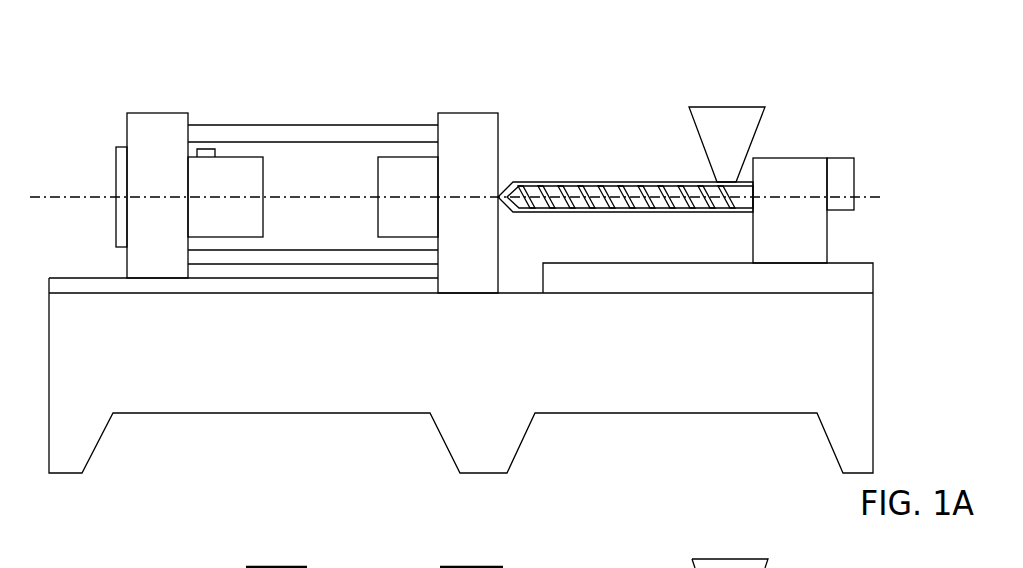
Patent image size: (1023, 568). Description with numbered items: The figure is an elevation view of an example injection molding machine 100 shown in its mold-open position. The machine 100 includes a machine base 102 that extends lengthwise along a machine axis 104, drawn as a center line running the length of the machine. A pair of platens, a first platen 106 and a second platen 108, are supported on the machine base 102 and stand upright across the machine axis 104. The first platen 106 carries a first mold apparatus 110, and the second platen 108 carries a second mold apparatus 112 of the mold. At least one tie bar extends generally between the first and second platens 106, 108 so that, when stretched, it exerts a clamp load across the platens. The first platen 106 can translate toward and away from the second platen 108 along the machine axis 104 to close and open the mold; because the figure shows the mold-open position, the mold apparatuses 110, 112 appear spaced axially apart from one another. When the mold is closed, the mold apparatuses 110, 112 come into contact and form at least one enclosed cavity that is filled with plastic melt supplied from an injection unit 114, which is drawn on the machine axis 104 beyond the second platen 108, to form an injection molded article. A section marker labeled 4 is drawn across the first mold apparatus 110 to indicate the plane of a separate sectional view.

The injection molding machine 100 is at (872, 90).
The machine base 102 is at (507, 375).
The machine axis 104 is at (875, 196).
The first platen 106 is at (176, 162).
The second platen 108 is at (487, 160).
The first mold apparatus 110 is at (264, 164).
The second mold apparatus 112 is at (428, 188).
The injection unit 114 is at (766, 123).
The section line 4- 4 is at (276, 202).